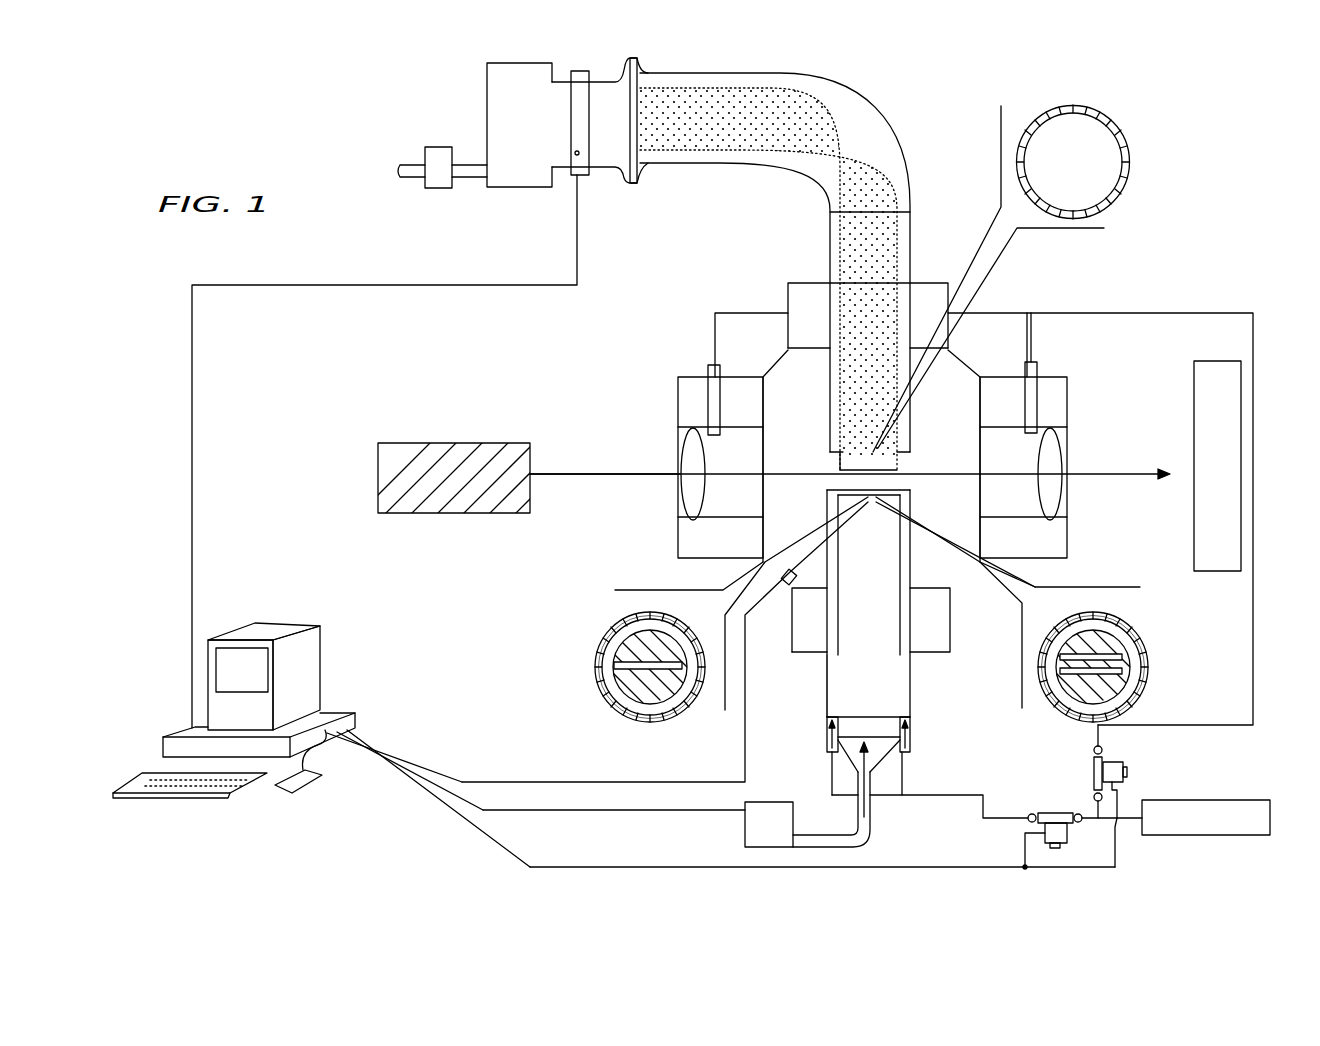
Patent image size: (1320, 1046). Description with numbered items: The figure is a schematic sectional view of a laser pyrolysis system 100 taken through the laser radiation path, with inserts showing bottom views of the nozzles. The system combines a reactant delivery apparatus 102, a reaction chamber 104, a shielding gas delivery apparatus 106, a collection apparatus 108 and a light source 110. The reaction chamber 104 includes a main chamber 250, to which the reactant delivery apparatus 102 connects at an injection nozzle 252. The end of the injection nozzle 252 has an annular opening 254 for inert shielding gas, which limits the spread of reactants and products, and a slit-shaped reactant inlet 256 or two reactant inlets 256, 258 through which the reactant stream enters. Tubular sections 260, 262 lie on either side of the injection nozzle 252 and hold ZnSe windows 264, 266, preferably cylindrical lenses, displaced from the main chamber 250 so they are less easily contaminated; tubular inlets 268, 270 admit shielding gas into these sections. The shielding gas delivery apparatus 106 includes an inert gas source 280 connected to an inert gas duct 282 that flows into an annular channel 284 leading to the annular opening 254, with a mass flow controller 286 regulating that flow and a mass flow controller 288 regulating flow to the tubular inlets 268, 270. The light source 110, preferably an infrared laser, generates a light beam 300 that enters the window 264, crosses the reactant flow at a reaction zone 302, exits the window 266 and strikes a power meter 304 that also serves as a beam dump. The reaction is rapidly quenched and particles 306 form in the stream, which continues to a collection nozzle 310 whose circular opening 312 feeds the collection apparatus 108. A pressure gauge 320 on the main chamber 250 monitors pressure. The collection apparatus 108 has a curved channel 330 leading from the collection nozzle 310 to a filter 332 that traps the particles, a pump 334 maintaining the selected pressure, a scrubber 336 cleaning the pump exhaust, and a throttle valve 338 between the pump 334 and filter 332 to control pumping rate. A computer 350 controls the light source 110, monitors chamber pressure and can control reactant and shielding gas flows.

The laser pyrolysis system 100 is at (1152, 545).
The reactant delivery apparatus 102 is at (740, 830).
The reaction chamber 104 is at (666, 450).
The shielding gas delivery apparatus 106 is at (1228, 745).
The collection apparatus 108 is at (775, 271).
The light source 110 is at (486, 440).
The main chamber 250 is at (950, 568).
The injection nozzle 252 is at (862, 500).
The annular opening 254 is at (616, 628).
The reactant inlet 256 is at (612, 666).
The reactant inlet 258 is at (1122, 672).
The tubular section 260 is at (688, 410).
The tubular section 262 is at (1058, 410).
The ZnSe window 264 is at (690, 498).
The ZnSe window 266 is at (1058, 462).
The tubular inlet 268 is at (708, 368).
The tubular inlet 270 is at (1040, 368).
The inert gas source 280 is at (1264, 798).
The inert gas duct 282 is at (828, 736).
The annular channel 284 is at (826, 680).
The mass flow controller 286 is at (1060, 812).
The mass flow controller 288 is at (1116, 762).
The light beam 300 is at (616, 474).
The reaction zone 302 is at (836, 474).
The power meter 304 is at (1212, 376).
The particles 306 is at (838, 460).
The collection nozzle 310 is at (1116, 205).
The circular opening 312 is at (1120, 158).
The pressure gauge 320 is at (790, 586).
The curved channel 330 is at (795, 183).
The filter 332 is at (618, 185).
The pump 334 is at (522, 187).
The scrubber 336 is at (442, 186).
The throttle valve 338 is at (573, 120).
The computer 350 is at (340, 712).